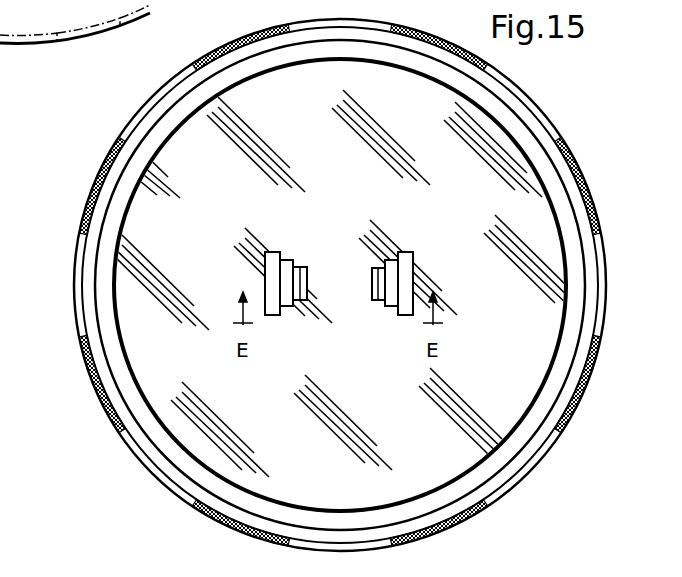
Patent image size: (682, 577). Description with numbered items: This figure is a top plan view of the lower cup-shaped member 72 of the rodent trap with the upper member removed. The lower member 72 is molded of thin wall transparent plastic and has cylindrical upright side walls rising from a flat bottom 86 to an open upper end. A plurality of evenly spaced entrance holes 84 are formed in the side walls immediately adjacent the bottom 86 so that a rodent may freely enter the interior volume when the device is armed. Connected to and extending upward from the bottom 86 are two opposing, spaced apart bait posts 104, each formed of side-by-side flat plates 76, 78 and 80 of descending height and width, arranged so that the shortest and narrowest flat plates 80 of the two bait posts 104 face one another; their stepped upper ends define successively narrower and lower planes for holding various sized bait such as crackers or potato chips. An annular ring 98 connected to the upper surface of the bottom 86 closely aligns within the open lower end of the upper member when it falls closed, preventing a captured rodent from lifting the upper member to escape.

The lower cup-shaped member 72 is at (94, 182).
The entrance holes 84 is at (77, 282).
The flat bottom 86 is at (153, 362).
The annular ring 98 is at (170, 448).
The flat plate 76 is at (272, 280).
The flat plate 78 is at (286, 260).
The flat plate 80 is at (302, 268).
The bait post 104 is at (414, 253).